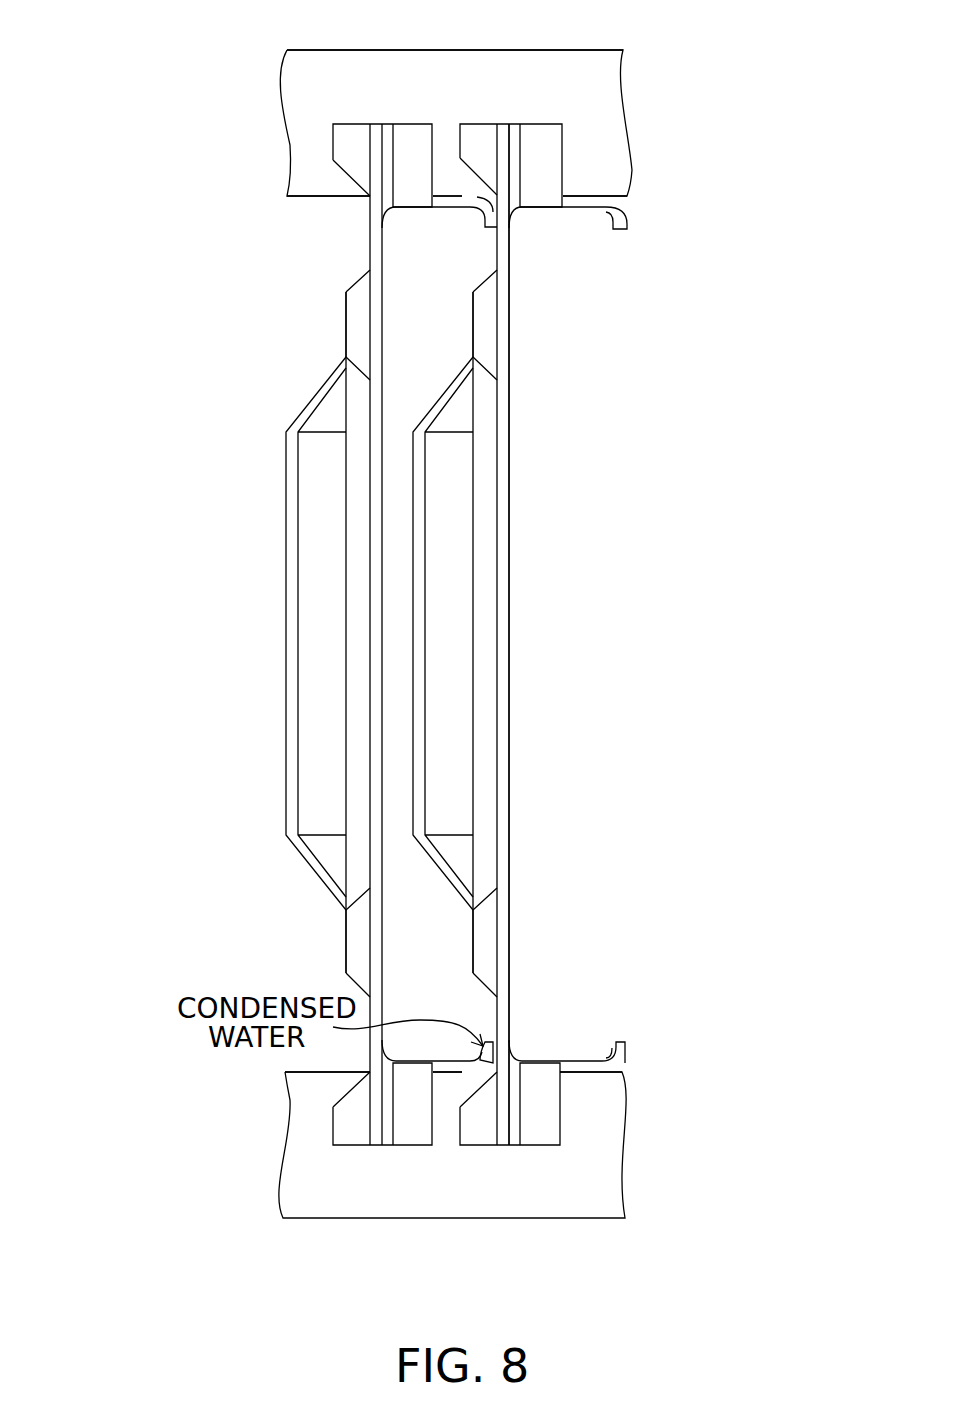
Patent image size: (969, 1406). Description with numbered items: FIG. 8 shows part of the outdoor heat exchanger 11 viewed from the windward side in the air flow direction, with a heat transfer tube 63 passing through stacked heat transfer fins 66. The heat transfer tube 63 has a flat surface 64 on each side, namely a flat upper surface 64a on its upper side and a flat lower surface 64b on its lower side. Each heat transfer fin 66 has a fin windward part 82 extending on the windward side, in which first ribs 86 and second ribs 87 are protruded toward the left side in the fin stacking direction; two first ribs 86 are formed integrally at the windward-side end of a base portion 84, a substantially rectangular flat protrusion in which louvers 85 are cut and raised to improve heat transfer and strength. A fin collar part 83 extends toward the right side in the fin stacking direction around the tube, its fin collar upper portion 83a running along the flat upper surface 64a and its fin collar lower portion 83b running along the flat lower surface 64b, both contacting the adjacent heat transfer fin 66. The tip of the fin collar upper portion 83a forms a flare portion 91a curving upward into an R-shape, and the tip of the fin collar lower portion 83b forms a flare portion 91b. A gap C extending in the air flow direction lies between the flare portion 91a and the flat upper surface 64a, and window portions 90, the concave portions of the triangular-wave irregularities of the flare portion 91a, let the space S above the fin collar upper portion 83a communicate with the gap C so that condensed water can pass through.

The outdoor heat exchanger 11 is at (117, 108).
The heat transfer tube 63 is at (280, 113).
The flat surface 64 is at (353, 638).
The flat upper surface 64a is at (515, 50).
The flat lower surface 64b is at (327, 198).
The second rib 87 is at (343, 150).
The first rib 86 is at (358, 328).
The louver 85 is at (293, 624).
The base portion 84 is at (488, 700).
The fin windward part 82 is at (500, 637).
The heat transfer fin 66 is at (510, 483).
The fin collar part 83 is at (522, 630).
The fin collar upper portion 83a is at (582, 1063).
The fin collar lower portion 83b is at (580, 200).
The flare portion 91a is at (617, 1043).
The flare portion 91b is at (622, 230).
The window portion 90 is at (494, 1042).
The space S is at (405, 982).
The gap C is at (498, 1064).